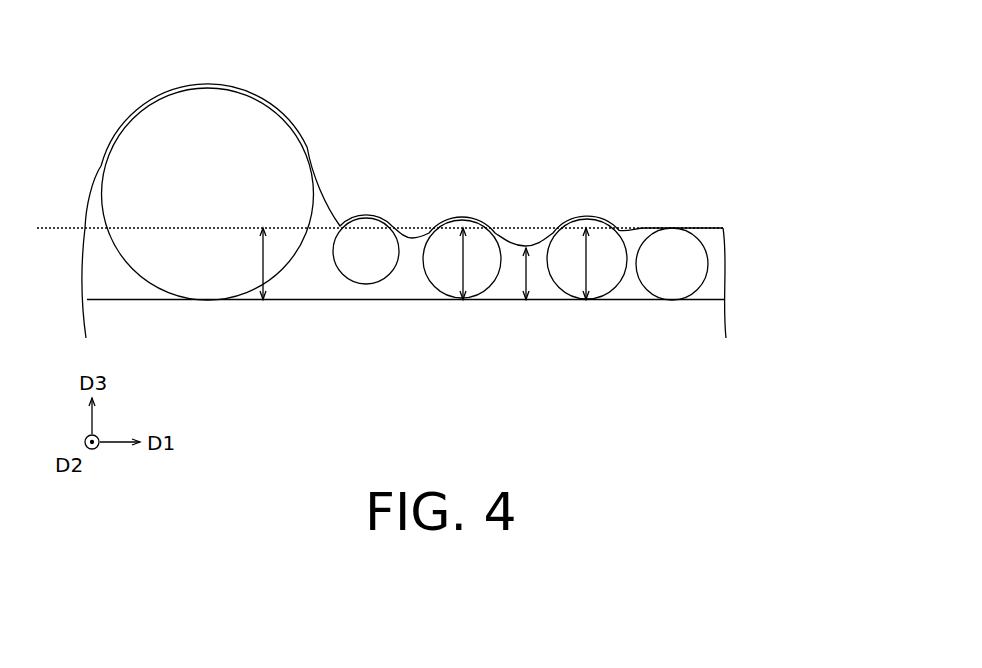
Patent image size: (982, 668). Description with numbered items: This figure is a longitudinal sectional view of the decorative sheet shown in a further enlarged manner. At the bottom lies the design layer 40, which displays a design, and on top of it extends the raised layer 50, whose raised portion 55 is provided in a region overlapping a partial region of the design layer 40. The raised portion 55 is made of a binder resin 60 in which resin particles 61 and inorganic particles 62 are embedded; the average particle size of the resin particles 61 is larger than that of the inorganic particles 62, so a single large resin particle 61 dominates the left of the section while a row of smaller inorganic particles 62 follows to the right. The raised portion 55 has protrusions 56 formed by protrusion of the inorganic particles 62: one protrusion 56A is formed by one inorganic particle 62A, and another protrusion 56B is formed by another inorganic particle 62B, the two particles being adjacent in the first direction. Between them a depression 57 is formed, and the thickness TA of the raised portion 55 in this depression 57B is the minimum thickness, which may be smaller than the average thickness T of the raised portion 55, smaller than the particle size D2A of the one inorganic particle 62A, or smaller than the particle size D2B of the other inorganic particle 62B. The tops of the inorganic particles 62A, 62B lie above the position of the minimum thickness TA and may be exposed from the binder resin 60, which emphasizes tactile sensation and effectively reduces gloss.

The design layer 40 is at (716, 313).
The raised layer 50 is at (461, 165).
The raised portion 55 is at (729, 243).
The protrusions 56 is at (367, 217).
The protrusion 56A is at (585, 228).
The protrusion 56B is at (462, 220).
The depression 57 is at (532, 210).
The depression 57B is at (526, 248).
The binder resin 60 is at (303, 285).
The resin particles 61 is at (239, 117).
The inorganic particles 62 is at (365, 268).
The inorganic particle 62A is at (609, 287).
The inorganic particle 62B is at (445, 280).
The average thickness T is at (254, 264).
The minimum thickness TA is at (528, 272).
The particle size D2A is at (590, 265).
The particle size D2B is at (460, 263).